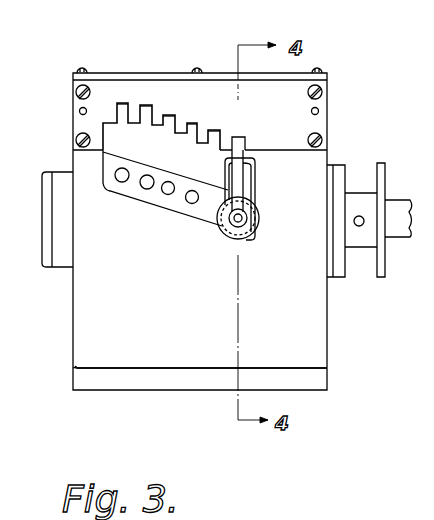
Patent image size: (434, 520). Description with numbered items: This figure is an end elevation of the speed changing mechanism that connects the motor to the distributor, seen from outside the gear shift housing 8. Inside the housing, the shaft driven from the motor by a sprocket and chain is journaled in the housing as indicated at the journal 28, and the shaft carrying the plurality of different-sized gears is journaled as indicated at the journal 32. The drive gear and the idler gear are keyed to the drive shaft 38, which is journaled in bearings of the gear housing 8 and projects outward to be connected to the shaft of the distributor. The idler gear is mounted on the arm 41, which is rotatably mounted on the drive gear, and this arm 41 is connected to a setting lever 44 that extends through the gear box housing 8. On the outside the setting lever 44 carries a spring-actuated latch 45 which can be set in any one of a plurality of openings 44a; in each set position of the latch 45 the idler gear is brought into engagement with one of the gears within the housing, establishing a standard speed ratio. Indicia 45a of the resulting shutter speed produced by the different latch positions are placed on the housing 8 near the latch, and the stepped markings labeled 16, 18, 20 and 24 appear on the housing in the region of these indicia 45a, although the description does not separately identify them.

The gear shift housing 8 is at (318, 332).
The cam step 16 is at (123, 96).
The cam step 18 is at (147, 102).
The cam step 20 is at (169, 109).
The cam step 24 is at (191, 116).
The journal 28 is at (214, 124).
The journal 32 is at (238, 137).
The drive shaft 38 is at (400, 202).
The arm 41 is at (240, 146).
The setting lever 44 is at (240, 187).
The openings 44a is at (187, 204).
The spring-actuated latch 45 is at (233, 232).
The indicia 45a is at (125, 90).